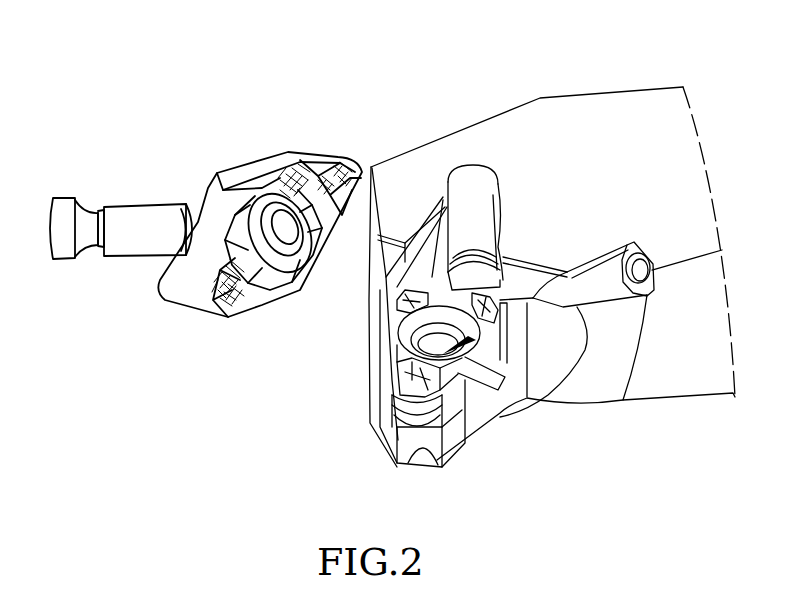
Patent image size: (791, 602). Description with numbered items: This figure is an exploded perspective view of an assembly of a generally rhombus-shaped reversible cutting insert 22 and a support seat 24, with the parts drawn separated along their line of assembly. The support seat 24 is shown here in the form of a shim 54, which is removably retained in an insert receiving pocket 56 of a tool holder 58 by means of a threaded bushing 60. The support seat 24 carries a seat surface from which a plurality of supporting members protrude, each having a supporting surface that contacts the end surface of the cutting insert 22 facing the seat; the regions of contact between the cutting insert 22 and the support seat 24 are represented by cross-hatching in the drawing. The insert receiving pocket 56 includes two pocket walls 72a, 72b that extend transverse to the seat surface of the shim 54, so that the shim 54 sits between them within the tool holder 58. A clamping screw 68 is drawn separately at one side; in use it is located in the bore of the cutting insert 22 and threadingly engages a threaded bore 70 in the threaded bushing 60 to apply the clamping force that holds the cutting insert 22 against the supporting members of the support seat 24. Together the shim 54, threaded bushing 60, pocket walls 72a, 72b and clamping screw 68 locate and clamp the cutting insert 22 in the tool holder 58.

The cutting insert 22 is at (212, 158).
The support seat 24 is at (395, 383).
The shim 54 is at (455, 392).
The insert receiving pocket 56 is at (474, 190).
The tool holder 58 is at (562, 152).
The threaded bushing 60 is at (395, 336).
The clamping screw 68 is at (124, 180).
The threaded bore 70 is at (557, 375).
The pocket wall 72a is at (435, 225).
The pocket wall 72b is at (486, 288).